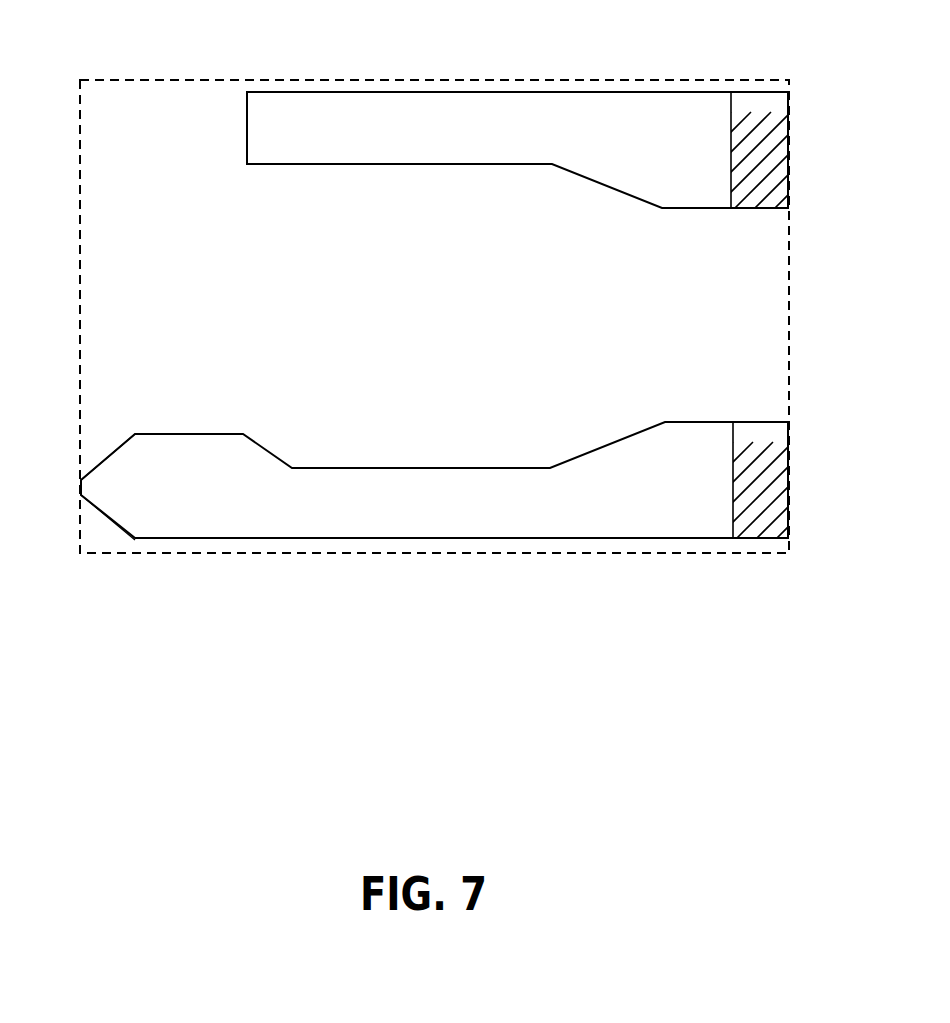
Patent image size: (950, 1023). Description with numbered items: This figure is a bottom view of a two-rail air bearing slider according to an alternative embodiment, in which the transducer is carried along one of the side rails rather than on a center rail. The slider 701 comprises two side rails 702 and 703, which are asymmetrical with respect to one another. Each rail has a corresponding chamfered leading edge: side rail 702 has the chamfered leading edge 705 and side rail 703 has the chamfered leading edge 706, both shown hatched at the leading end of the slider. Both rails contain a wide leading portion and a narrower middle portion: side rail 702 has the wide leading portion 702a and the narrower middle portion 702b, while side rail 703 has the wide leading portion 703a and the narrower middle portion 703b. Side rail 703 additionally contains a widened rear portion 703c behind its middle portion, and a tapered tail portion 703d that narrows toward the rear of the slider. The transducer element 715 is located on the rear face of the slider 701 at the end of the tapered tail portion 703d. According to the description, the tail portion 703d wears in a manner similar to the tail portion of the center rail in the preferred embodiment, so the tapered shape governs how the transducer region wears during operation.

The slider 701 is at (793, 608).
The side rail 702 is at (789, 163).
The wide leading portion 702a is at (788, 77).
The narrower middle portion 702b is at (545, 77).
The side rail 703 is at (789, 455).
The wide leading portion 703a is at (788, 556).
The narrower middle portion 703b is at (552, 556).
The widened rear portion 703c is at (292, 556).
The tapered tail portion 703d is at (133, 556).
The chamfered leading edge 705 is at (778, 122).
The chamfered leading edge 706 is at (762, 437).
The transducer element 715 is at (81, 490).